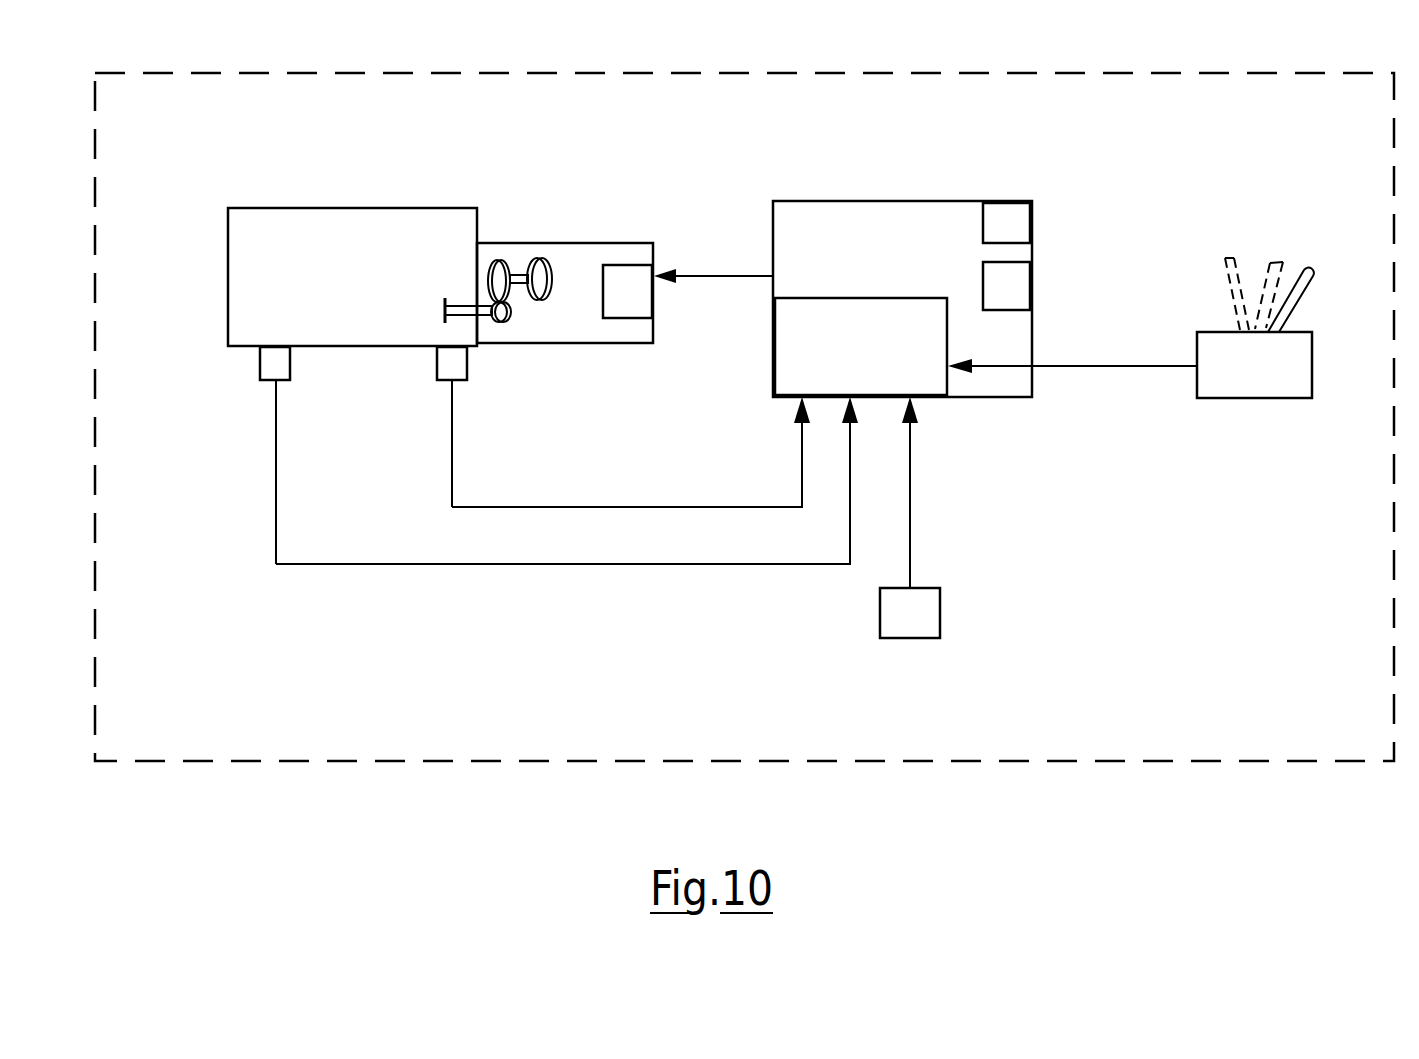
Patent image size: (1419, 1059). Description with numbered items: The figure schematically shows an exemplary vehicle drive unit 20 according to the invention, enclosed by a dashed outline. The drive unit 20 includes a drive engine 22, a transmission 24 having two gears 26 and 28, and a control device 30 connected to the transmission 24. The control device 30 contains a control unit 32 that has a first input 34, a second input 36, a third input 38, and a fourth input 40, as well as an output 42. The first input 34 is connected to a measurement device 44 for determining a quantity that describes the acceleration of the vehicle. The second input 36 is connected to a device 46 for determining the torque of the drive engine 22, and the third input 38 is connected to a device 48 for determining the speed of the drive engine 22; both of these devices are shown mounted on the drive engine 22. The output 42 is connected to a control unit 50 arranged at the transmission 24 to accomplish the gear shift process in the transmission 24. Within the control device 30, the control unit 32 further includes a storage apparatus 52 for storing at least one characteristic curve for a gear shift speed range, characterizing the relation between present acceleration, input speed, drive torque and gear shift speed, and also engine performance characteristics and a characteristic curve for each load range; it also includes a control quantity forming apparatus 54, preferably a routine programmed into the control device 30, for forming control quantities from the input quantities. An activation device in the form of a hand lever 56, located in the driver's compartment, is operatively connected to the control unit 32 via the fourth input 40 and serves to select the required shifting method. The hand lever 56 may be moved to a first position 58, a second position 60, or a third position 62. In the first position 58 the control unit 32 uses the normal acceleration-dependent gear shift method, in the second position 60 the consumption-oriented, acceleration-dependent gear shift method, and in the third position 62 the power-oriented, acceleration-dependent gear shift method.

The vehicle drive unit 20 is at (660, 73).
The drive engine 22 is at (370, 208).
The transmission 24 is at (530, 243).
The gear 26 is at (499, 261).
The gear 28 is at (545, 278).
The control device 30 is at (808, 201).
The control unit 32 is at (880, 298).
The first input 34 is at (912, 447).
The second input 36 is at (802, 449).
The third input 38 is at (850, 537).
The fourth input 40 is at (1152, 367).
The output 42 is at (697, 272).
The measurement device 44 is at (940, 620).
The device for determining torque 46 is at (467, 370).
The device for determining speed 48 is at (290, 372).
The control unit 50 is at (628, 320).
The storage apparatus 52 is at (983, 231).
The control quantity forming apparatus 54 is at (1008, 310).
The hand lever 56 is at (1268, 212).
The first position 58 is at (1293, 300).
The second position 60 is at (1262, 283).
The third position 62 is at (1226, 258).